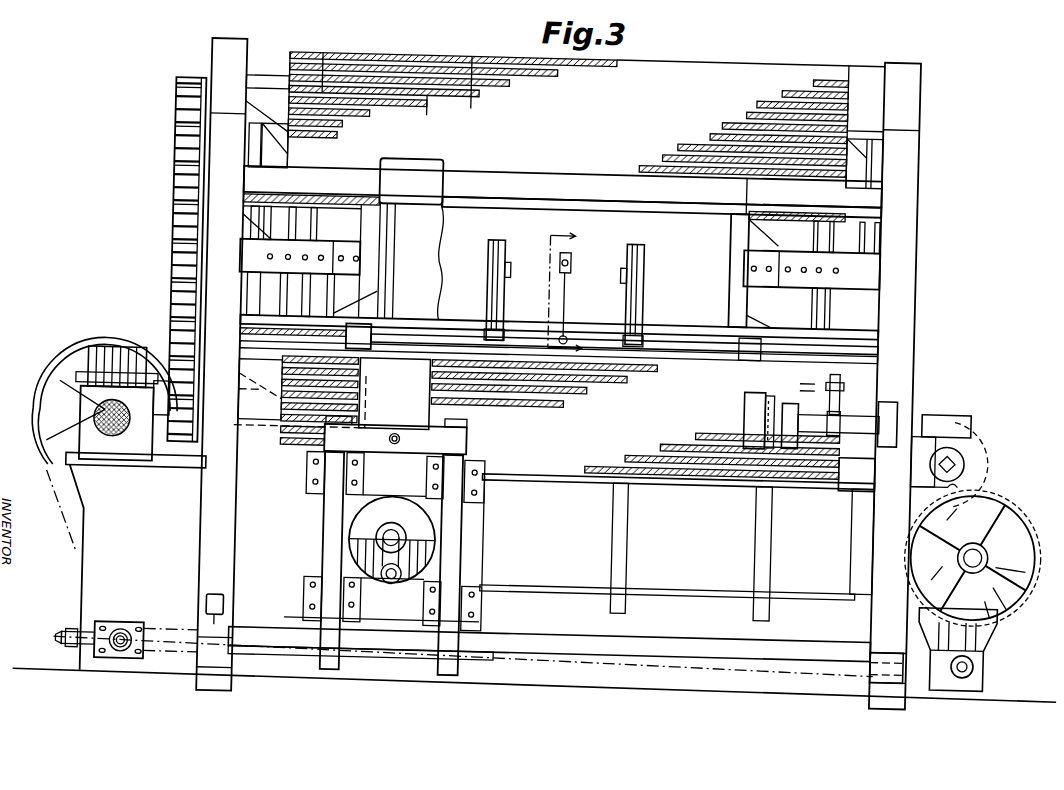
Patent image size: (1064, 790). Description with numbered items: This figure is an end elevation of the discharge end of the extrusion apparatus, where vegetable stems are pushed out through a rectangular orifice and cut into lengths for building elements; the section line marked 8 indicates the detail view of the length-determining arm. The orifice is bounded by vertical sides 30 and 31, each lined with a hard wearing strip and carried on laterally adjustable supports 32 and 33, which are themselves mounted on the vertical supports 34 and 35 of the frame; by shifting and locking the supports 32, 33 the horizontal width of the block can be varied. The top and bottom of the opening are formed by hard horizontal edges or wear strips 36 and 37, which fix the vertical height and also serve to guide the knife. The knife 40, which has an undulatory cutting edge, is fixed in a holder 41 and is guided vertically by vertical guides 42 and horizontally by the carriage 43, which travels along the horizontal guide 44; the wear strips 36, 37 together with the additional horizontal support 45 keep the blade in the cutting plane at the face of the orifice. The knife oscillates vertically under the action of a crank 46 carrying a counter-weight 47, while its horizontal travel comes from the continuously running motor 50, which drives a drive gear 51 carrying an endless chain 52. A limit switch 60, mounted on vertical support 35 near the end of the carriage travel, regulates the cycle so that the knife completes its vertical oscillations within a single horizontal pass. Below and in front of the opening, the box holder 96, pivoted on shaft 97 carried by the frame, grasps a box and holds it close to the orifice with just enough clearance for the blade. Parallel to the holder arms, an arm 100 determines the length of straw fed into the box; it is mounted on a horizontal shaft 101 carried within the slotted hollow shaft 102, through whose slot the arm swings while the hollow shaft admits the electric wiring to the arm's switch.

The section line 8- 8 is at (573, 291).
The vertical side of the discharge opening 30 is at (725, 225).
The vertical side of the discharge opening 31 is at (379, 253).
The laterally adjustable support 32 is at (850, 257).
The laterally adjustable support 33 is at (319, 253).
The vertical support 34 is at (898, 154).
The vertical support 35 is at (223, 96).
The horizontal edge of the discharge opening 36 is at (528, 210).
The horizontal edge of the discharge opening 37 is at (519, 323).
The knife 40 is at (413, 216).
The holder 41 is at (454, 438).
The vertical guides 42 is at (461, 535).
The carriage 43 is at (427, 650).
The horizontal guide 44 is at (673, 651).
The horizontal support 45 is at (484, 181).
The crank 46 is at (398, 527).
The counter-weight 47 is at (378, 516).
The motor 50 is at (1003, 601).
The drive gear 51 is at (973, 667).
The endless chain 52 is at (928, 667).
The limit switch 60 is at (208, 611).
The box holder 96 is at (483, 299).
The shaft 97 is at (686, 356).
The arm 100 is at (565, 262).
The horizontal shaft 101 is at (273, 337).
The slotted hollow shaft 102 is at (411, 347).